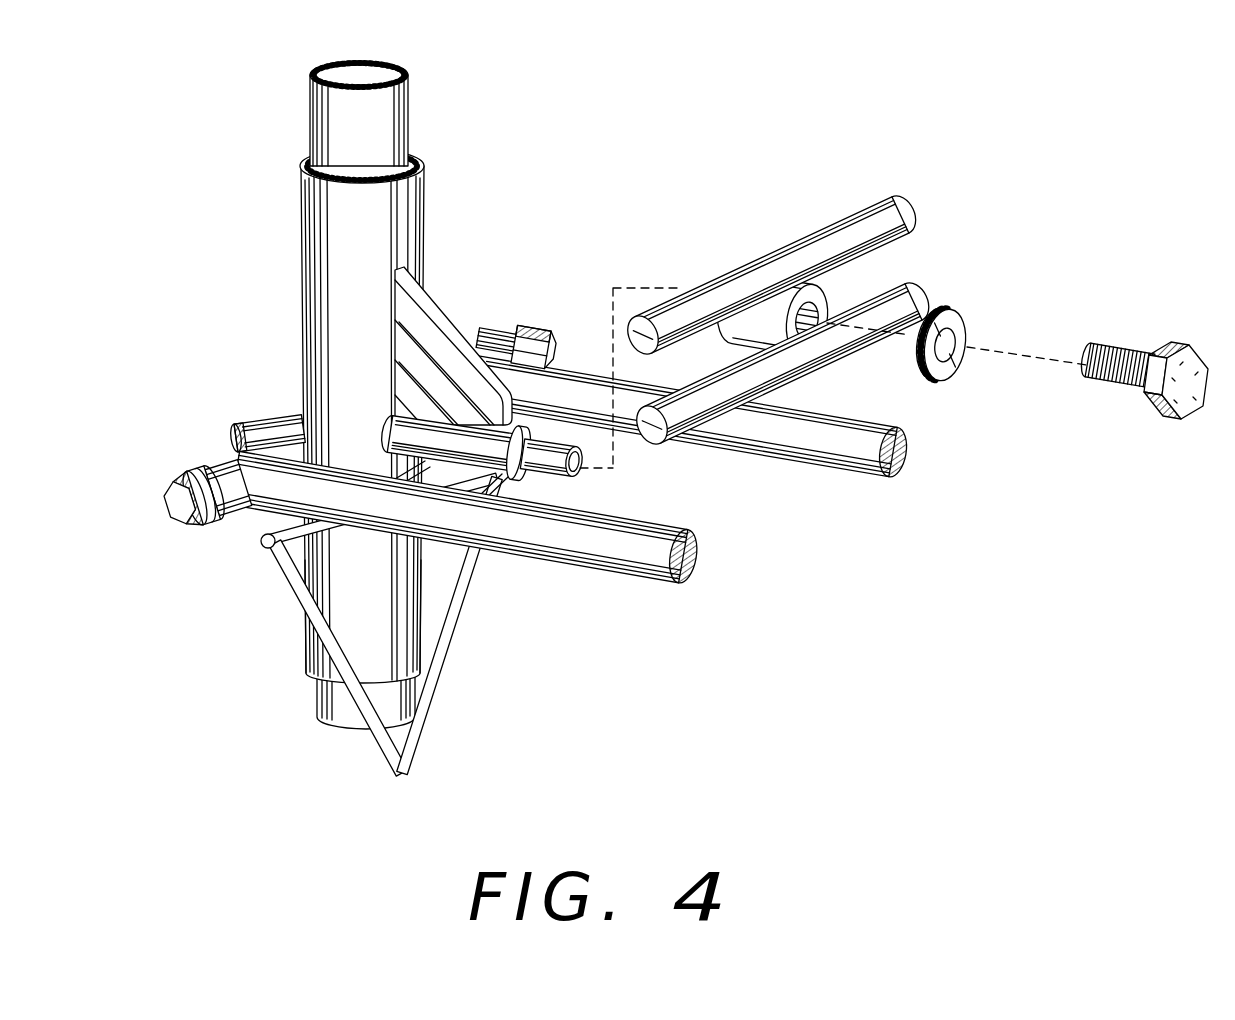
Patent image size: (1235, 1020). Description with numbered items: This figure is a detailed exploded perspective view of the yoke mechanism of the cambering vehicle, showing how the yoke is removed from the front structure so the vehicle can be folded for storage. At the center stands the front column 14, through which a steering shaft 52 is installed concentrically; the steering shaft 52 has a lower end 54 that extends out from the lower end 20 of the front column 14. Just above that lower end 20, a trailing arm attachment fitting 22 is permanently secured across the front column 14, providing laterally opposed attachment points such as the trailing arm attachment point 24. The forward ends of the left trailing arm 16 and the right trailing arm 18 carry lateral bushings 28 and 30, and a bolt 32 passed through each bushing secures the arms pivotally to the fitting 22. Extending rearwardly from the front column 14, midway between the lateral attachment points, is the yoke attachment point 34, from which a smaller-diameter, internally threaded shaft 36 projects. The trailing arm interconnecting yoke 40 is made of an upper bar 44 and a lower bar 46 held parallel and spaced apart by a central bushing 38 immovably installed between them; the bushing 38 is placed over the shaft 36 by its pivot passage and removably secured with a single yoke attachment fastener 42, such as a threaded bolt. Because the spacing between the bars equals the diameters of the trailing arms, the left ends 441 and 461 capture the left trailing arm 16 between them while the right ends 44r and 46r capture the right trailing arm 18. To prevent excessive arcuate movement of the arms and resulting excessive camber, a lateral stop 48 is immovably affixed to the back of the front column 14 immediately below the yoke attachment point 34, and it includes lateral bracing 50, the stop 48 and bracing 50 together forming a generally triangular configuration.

The front column 14 is at (380, 370).
The left trailing arm 16 is at (603, 570).
The right trailing arm 18 is at (815, 477).
The lower end 20 is at (305, 645).
The trailing arm attachment fitting 22 is at (300, 425).
The trailing arm attachment point 24 is at (258, 442).
The lateral bushing 28 is at (192, 470).
The lateral bushing 30 is at (490, 334).
The bolt 32 is at (548, 330).
The yoke attachment point 34 is at (455, 443).
The internally threaded shaft 36 is at (588, 470).
The central bushing 38 is at (822, 340).
The trailing arm interconnecting yoke 40 is at (737, 235).
The yoke attachment fastener 42 is at (1165, 422).
The upper bar 44 is at (763, 258).
The left end 441 is at (648, 292).
The right end 44r is at (928, 218).
The lower bar 46 is at (800, 368).
The left end 461 is at (678, 442).
The right end 46r is at (933, 290).
The lateral stop 48 is at (382, 463).
The lateral bracing 50 is at (440, 612).
The steering shaft 52 is at (310, 110).
The lower end 54 is at (318, 712).